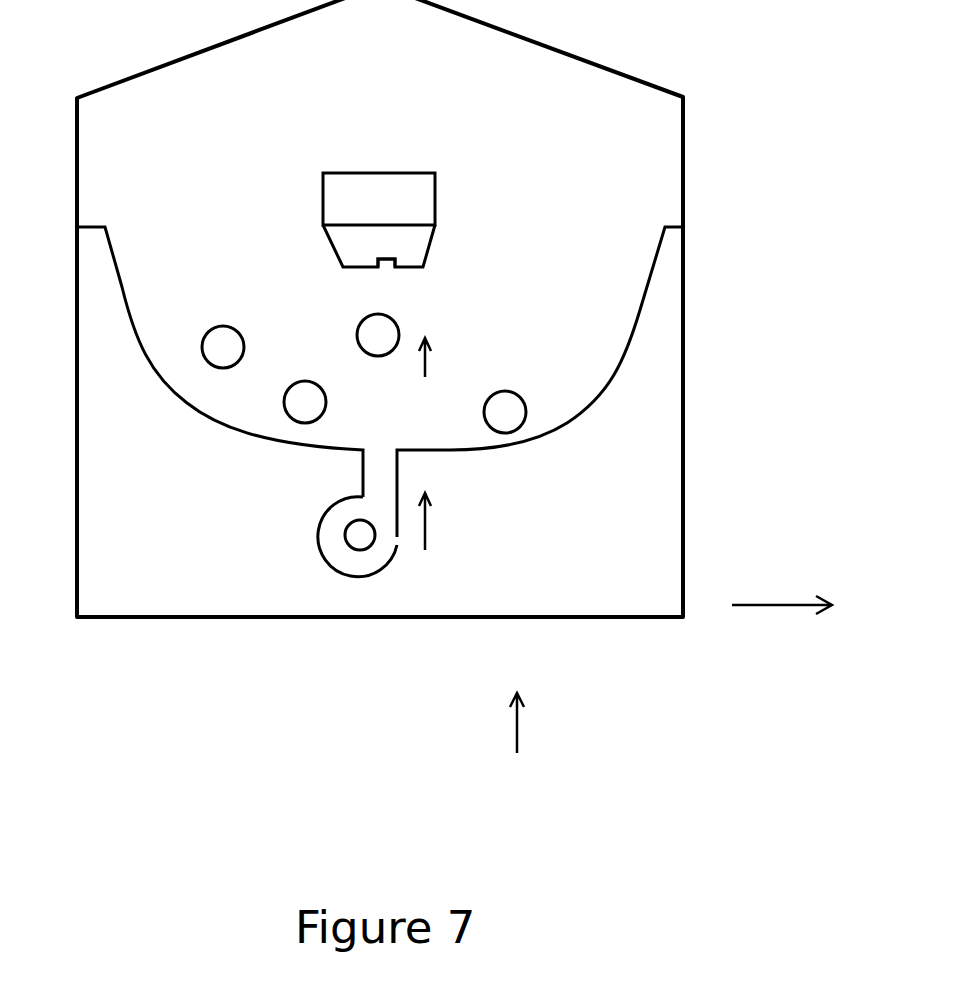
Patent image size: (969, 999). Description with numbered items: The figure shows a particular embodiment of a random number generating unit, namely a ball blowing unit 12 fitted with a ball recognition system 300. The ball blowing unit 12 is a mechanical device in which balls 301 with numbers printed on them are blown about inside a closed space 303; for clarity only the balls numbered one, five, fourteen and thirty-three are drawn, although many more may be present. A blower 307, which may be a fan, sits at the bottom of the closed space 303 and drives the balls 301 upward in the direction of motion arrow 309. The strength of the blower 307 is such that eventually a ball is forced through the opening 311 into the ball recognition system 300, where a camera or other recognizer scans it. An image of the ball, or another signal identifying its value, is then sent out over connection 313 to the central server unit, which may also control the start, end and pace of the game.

The ball recognition system 300 is at (385, 187).
The closed space 303 is at (643, 167).
The opening 311 is at (397, 260).
The balls 301 is at (538, 357).
The blower 307 is at (320, 533).
The motion arrow 309 is at (450, 449).
The connection 313 is at (782, 573).
The ball blowing unit 12 is at (521, 751).